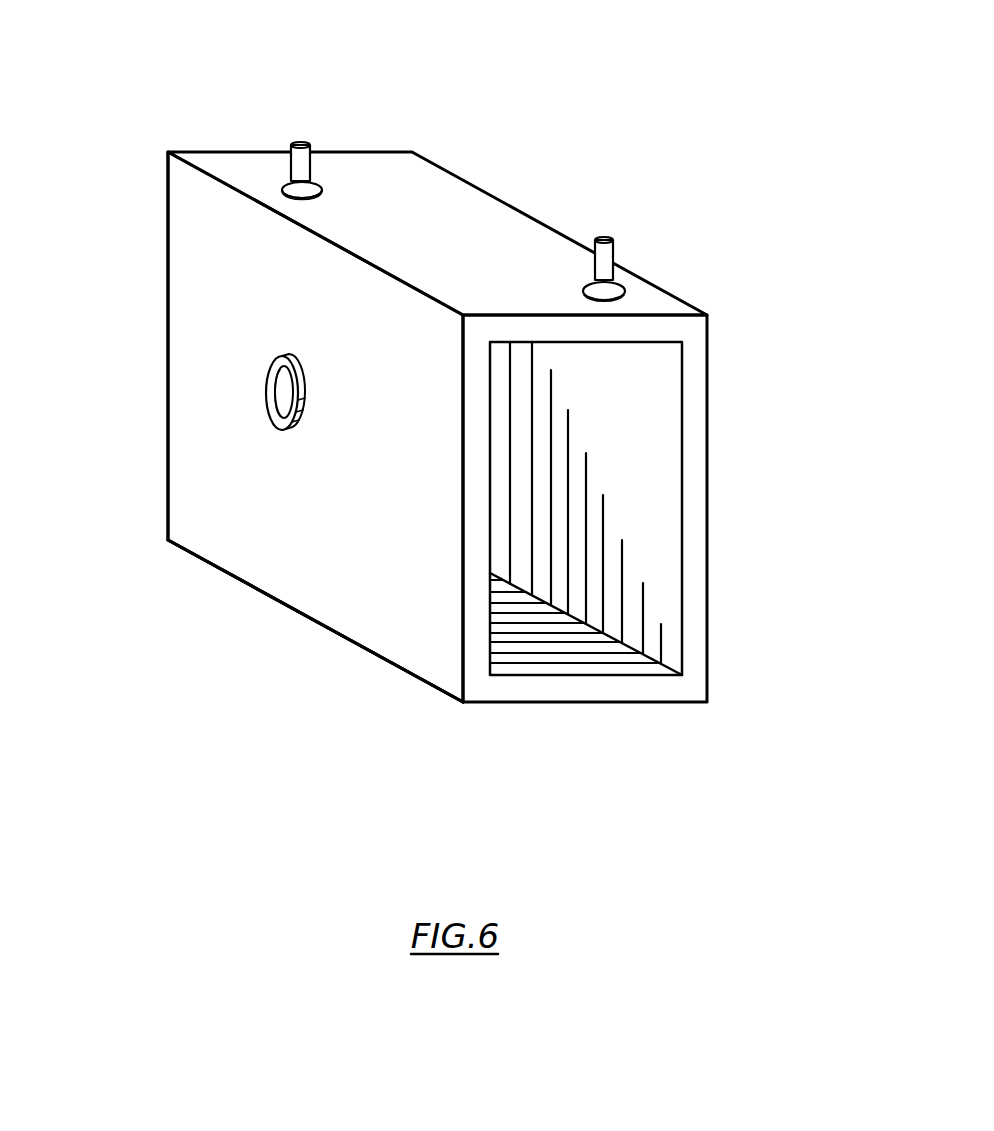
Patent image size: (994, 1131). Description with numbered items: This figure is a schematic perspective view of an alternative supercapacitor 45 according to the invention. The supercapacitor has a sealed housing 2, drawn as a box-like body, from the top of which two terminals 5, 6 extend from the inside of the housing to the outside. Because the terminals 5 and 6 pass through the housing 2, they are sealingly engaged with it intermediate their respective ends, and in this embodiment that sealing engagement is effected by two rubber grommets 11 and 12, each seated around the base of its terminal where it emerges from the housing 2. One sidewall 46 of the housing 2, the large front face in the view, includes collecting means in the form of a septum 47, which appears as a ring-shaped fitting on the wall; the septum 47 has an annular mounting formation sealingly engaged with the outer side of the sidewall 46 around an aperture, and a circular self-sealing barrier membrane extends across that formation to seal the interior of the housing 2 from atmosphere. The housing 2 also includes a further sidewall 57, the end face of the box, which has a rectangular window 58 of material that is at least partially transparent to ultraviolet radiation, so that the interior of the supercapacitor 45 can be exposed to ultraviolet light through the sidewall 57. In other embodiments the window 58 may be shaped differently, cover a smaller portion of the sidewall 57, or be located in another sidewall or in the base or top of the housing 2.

The housing 2 is at (160, 393).
The terminal 5 is at (296, 132).
The terminal 6 is at (580, 263).
The rubber grommet 11 is at (318, 190).
The rubber grommet 12 is at (625, 290).
The supercapacitor 45 is at (270, 623).
The sidewall 46 is at (222, 250).
The septum 47 is at (262, 370).
The sidewall 57 is at (693, 558).
The window 58 is at (627, 443).